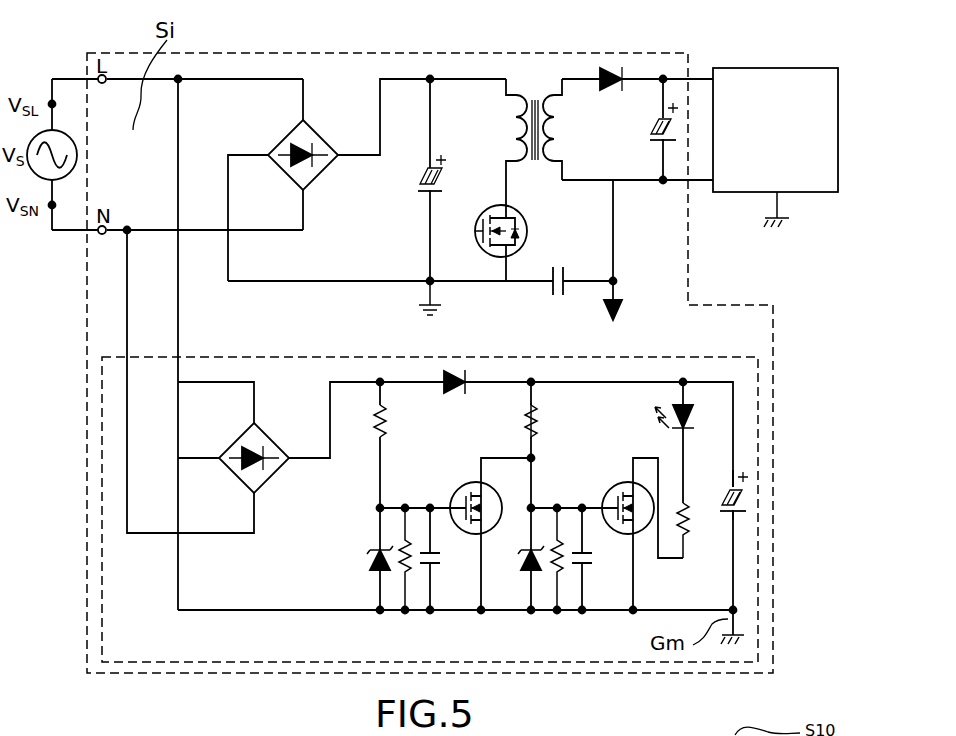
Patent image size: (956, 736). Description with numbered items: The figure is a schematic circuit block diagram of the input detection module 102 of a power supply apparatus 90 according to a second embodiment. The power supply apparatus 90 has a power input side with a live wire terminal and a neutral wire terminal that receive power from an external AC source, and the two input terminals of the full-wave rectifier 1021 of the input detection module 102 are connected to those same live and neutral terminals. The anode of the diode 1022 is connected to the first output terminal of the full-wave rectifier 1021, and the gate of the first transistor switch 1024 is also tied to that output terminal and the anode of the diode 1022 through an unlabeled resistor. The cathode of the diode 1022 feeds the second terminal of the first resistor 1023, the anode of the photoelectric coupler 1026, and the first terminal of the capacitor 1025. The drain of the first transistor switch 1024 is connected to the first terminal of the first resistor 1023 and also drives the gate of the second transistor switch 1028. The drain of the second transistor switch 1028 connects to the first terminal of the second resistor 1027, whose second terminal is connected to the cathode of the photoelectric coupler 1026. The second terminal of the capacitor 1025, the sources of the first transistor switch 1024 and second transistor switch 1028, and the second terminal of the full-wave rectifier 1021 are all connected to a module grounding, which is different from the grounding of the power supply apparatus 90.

The power supply apparatus 90 is at (447, 53).
The input detection module 102 is at (633, 358).
The full-wave rectifier 1021 is at (237, 441).
The diode 1022 is at (455, 395).
The first resistor 1023 is at (540, 430).
The first transistor switch 1024 is at (459, 499).
The capacitor 1025 is at (738, 510).
The photoelectric coupler 1026 is at (676, 406).
The second resistor 1027 is at (688, 532).
The second transistor switch 1028 is at (607, 499).